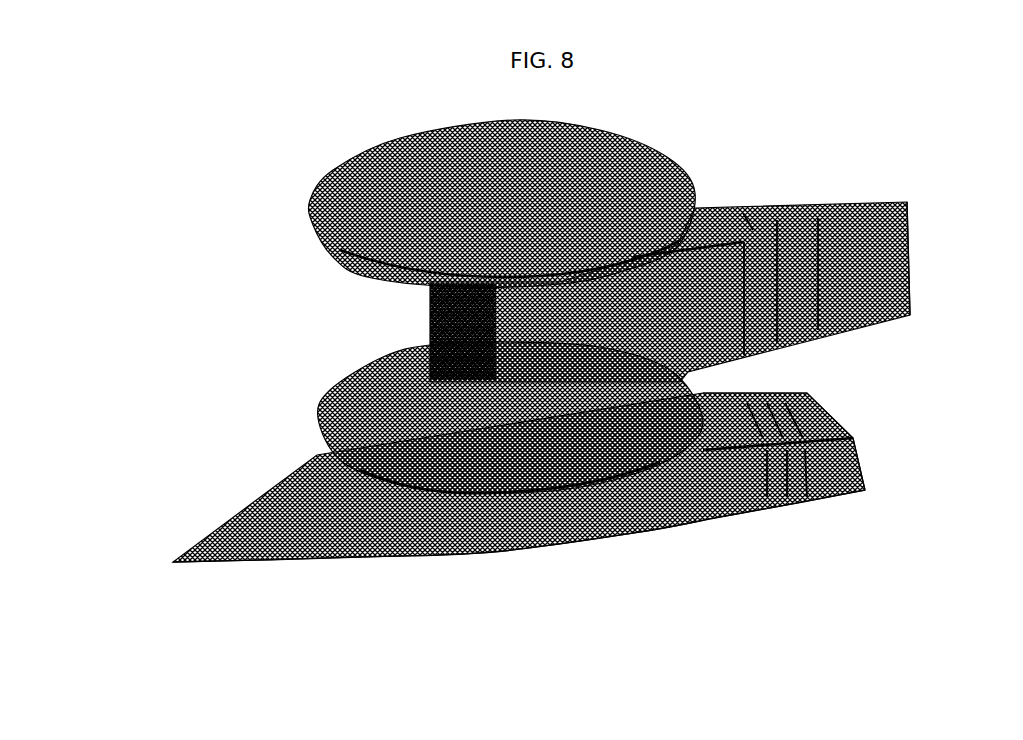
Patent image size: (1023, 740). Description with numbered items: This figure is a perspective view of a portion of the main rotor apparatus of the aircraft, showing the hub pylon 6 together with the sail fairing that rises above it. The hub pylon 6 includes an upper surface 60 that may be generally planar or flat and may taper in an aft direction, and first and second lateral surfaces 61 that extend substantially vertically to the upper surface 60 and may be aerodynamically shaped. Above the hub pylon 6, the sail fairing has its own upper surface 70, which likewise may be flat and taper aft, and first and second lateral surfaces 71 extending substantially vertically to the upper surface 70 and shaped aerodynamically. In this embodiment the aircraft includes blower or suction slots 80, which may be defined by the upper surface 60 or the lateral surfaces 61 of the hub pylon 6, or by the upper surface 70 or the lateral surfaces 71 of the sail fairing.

The hub pylon 6 is at (295, 467).
The upper surface 60 is at (725, 427).
The first and second lateral surfaces 61 is at (562, 522).
The upper surface 70 is at (778, 217).
The first and second lateral surfaces 71 is at (873, 243).
The blower or suction slots 80 is at (820, 303).